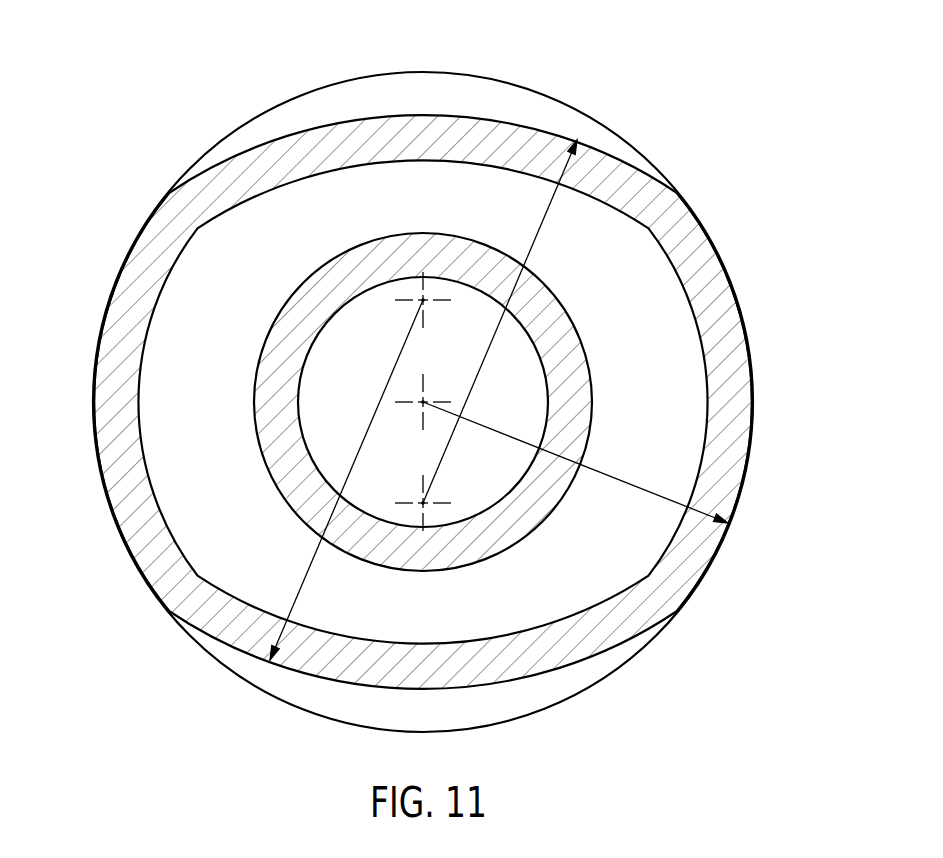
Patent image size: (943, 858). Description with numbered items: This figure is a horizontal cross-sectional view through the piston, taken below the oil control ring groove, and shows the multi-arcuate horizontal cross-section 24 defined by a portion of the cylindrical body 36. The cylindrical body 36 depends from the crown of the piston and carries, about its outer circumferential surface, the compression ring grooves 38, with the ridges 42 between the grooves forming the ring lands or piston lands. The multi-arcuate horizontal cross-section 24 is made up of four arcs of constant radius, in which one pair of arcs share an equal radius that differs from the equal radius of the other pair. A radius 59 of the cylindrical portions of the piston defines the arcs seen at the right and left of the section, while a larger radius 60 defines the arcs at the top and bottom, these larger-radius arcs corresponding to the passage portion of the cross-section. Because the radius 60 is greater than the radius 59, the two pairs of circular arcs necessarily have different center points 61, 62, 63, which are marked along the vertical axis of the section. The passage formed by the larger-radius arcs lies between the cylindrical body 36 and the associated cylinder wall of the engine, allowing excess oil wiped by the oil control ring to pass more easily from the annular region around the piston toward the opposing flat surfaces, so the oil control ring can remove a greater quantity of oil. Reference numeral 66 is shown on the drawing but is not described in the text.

The multi-arcuate horizontal cross-section 24 is at (423, 395).
The cylindrical body 36 is at (120, 540).
The compression ring grooves 38 is at (422, 393).
The ridges 42 is at (92, 403).
The radius of the cylindrical portions 59 is at (628, 482).
The radius corresponding to the passage portion 60 is at (537, 242).
The center point 61 is at (422, 403).
The center point 62 is at (427, 507).
The center point 63 is at (418, 296).
The lens assembly 66 is at (397, 374).